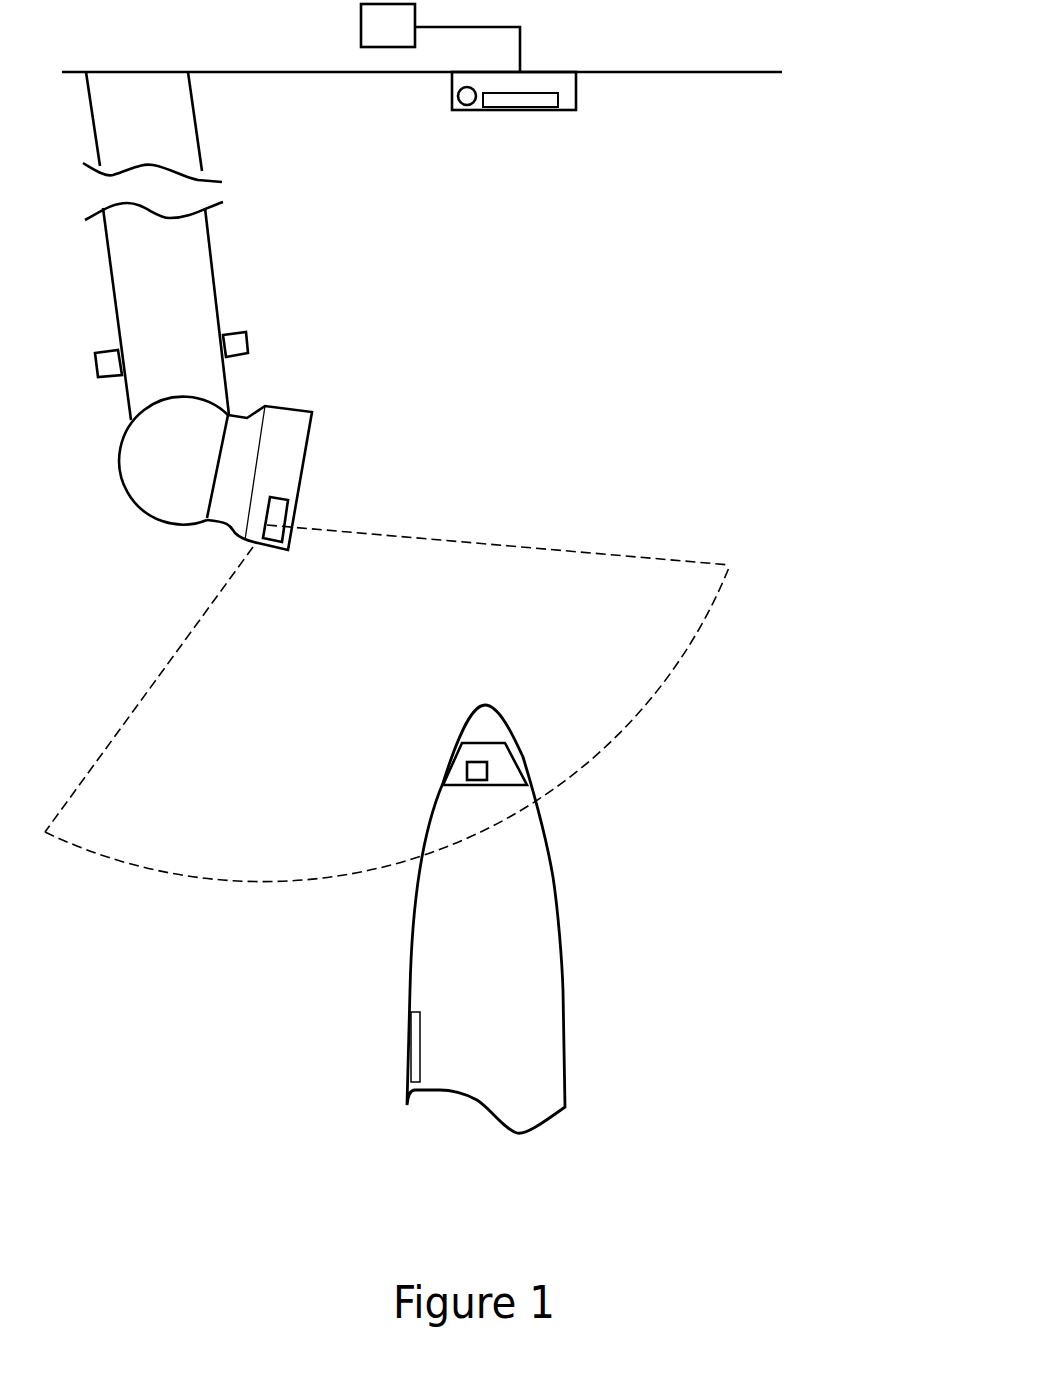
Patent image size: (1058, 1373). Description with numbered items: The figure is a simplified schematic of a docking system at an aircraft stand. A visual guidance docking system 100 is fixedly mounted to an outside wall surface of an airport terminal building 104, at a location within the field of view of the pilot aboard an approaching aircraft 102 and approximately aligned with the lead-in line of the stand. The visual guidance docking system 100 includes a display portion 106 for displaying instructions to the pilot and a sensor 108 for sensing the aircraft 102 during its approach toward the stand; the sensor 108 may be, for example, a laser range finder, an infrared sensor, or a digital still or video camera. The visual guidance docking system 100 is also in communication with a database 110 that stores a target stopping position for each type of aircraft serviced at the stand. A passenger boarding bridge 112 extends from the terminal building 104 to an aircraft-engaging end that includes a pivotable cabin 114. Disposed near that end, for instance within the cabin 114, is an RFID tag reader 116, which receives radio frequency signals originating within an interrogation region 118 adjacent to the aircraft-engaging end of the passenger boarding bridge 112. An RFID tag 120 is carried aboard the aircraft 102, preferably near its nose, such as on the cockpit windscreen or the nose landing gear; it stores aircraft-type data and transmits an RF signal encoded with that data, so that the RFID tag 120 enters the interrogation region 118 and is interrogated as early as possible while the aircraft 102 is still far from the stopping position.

The visual guidance docking system 100 is at (577, 93).
The aircraft 102 is at (560, 943).
The airport terminal building 104 is at (732, 59).
The display portion 106 is at (518, 112).
The sensor 108 is at (466, 110).
The database 110 is at (374, 47).
The passenger boarding bridge 112 is at (330, 368).
The pivotable cabin 114 is at (308, 430).
The radio frequency identification tag reader 116 is at (277, 496).
The interrogation region 118 is at (595, 607).
The RFID tag 120 is at (487, 768).